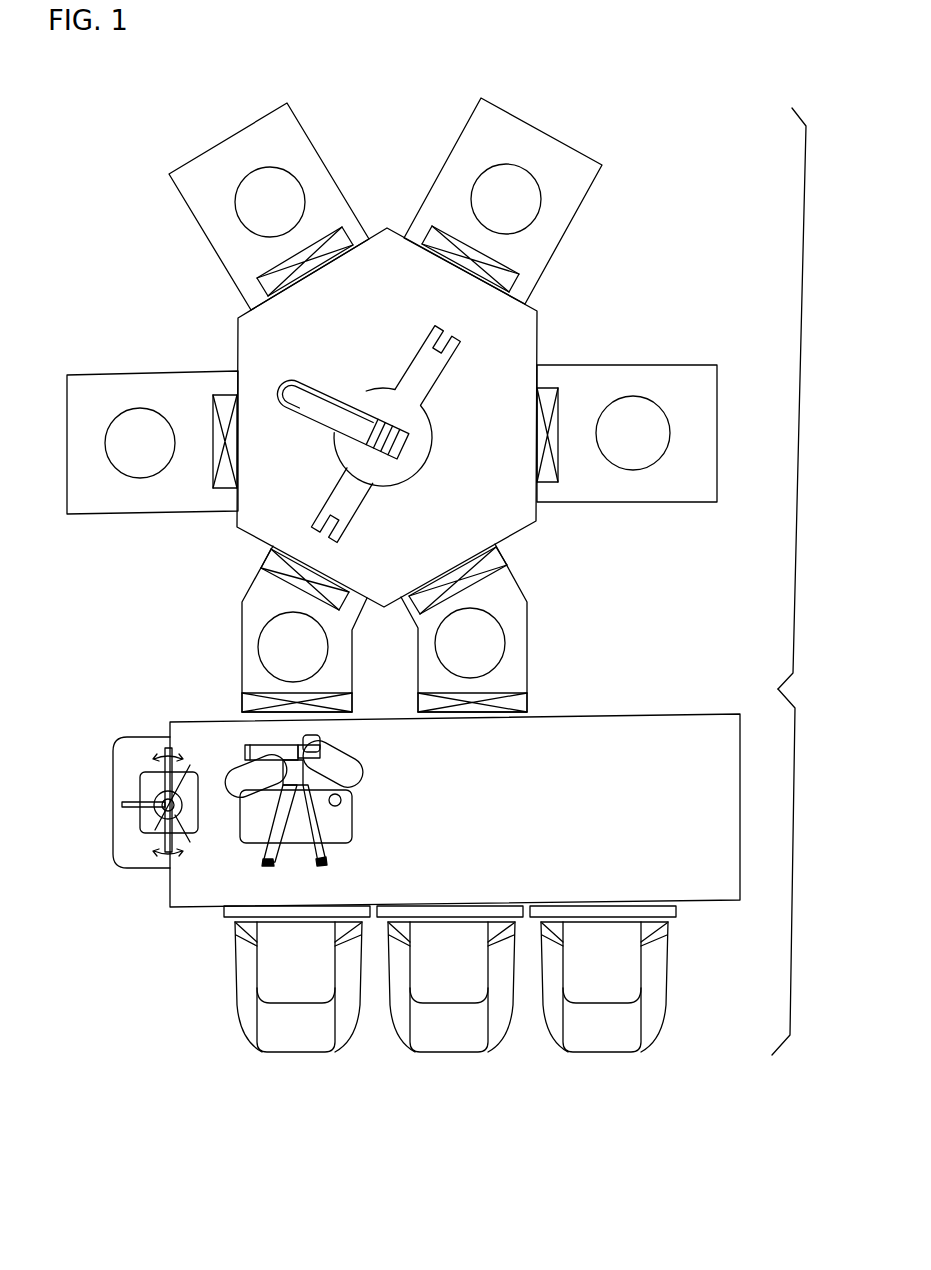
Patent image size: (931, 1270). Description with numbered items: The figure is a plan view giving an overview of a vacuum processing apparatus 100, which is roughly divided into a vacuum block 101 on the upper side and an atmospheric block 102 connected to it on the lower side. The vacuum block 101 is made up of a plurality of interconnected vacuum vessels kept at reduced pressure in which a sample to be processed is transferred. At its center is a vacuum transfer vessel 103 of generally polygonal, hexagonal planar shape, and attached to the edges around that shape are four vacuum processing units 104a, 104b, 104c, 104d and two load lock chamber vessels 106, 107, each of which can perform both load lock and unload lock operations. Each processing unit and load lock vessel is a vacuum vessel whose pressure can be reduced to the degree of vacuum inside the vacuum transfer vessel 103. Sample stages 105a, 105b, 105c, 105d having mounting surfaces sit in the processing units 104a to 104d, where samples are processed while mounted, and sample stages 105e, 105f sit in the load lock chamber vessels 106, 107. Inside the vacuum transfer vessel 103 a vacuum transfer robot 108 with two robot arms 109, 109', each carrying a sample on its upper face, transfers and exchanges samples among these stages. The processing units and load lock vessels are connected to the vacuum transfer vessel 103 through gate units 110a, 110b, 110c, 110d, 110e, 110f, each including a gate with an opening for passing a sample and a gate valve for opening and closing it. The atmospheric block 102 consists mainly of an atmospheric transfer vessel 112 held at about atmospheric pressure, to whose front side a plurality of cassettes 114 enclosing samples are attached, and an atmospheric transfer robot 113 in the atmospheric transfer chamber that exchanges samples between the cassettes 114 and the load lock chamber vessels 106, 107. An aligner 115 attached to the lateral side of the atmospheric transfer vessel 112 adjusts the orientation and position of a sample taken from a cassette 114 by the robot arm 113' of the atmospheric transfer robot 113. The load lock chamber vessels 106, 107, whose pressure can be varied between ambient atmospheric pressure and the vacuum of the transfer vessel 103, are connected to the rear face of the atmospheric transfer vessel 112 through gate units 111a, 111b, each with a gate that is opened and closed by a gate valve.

The vacuum processing apparatus 100 is at (682, 131).
The vacuum block 101 is at (814, 398).
The atmospheric block 102 is at (811, 872).
The vacuum transfer vessel 103 is at (538, 331).
The vacuum processing unit 104a is at (565, 137).
The vacuum processing unit 104b is at (243, 134).
The vacuum processing unit 104c is at (650, 366).
The vacuum processing unit 104d is at (92, 513).
The sample stage 105a is at (533, 205).
The sample stage 105b is at (297, 187).
The sample stage 105c is at (650, 455).
The sample stage 105d is at (130, 408).
The sample stage 105e is at (493, 627).
The sample stage 105f is at (258, 650).
The load lock chamber vessel 106 is at (527, 648).
The load lock chamber vessel 107 is at (243, 617).
The vacuum transfer robot 108 is at (338, 385).
The robot arm 109 is at (457, 369).
The robot arm 109' is at (385, 509).
The gate unit 110a is at (503, 279).
The gate unit 110b is at (258, 289).
The gate unit 110c is at (550, 388).
The gate unit 110d is at (230, 392).
The gate unit 110e is at (498, 552).
The gate unit 110f is at (273, 563).
The gate unit 111a is at (528, 698).
The gate unit 111b is at (243, 704).
The atmospheric transfer vessel 112 is at (667, 713).
The atmospheric transfer robot 113 is at (343, 789).
The robot arm 113' is at (349, 832).
The cassette 114 is at (290, 1053).
The aligner 115 is at (133, 867).